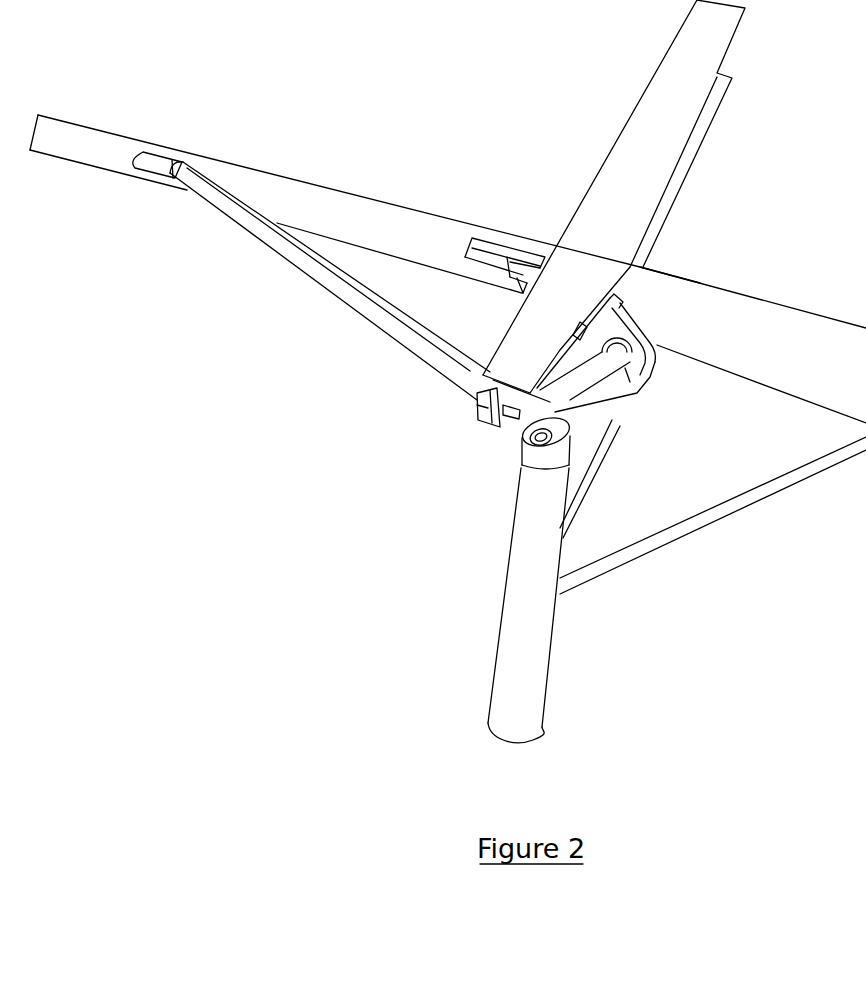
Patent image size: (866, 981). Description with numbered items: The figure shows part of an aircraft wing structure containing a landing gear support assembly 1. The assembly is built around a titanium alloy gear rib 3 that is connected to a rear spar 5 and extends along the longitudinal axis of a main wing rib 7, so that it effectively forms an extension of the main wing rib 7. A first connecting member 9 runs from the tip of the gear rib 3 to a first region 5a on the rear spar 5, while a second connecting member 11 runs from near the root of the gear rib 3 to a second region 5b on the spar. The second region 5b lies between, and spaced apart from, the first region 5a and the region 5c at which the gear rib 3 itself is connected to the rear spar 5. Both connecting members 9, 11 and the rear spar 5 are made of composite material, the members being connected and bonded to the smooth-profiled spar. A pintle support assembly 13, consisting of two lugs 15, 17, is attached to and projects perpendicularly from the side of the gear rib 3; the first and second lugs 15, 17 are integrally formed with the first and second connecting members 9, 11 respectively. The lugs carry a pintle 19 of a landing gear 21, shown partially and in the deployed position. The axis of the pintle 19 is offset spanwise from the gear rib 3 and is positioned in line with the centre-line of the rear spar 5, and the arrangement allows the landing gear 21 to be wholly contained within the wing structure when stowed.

The landing gear support assembly 1 is at (379, 379).
The gear rib 3 is at (522, 362).
The rear spar 5 is at (377, 223).
The first region 5a is at (148, 161).
The second region 5b is at (523, 250).
The region at which the gear rib is connected to the rear spar 5c is at (641, 268).
The main wing rib 7 is at (642, 127).
The first connecting member 9 is at (355, 295).
The second connecting member 11 is at (493, 260).
The pintle support assembly 13 is at (664, 400).
The first lug 15 is at (520, 417).
The second lug 17 is at (604, 327).
The pintle 19 is at (593, 387).
The landing gear 21 is at (583, 623).